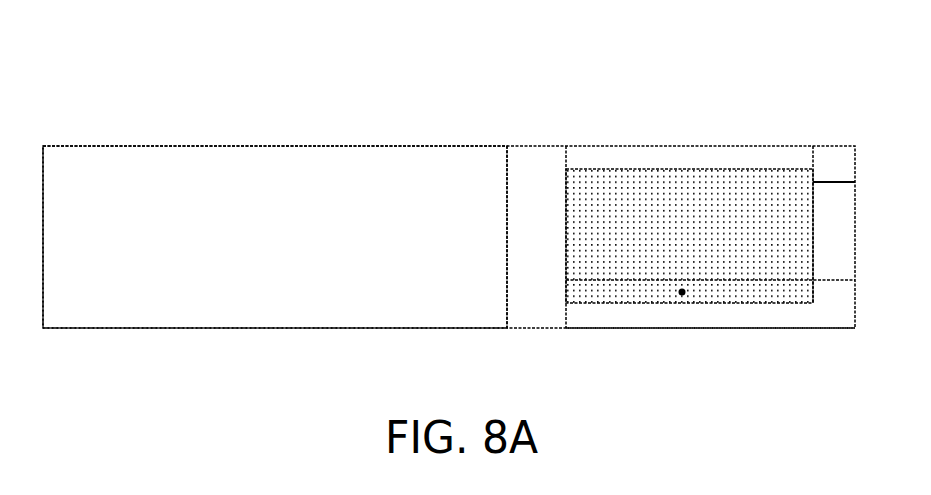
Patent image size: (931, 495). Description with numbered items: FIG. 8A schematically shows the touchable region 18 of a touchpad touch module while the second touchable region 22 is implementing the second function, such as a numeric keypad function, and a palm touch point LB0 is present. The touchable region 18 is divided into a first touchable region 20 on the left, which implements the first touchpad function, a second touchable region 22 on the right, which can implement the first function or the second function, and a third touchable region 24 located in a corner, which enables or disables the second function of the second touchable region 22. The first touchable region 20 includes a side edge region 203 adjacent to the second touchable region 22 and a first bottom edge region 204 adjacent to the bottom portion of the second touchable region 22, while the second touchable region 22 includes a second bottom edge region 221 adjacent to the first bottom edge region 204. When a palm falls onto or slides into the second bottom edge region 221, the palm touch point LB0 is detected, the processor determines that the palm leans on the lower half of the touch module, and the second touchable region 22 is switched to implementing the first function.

The touchable region 18 is at (360, 146).
The first touchable region 20 is at (440, 158).
The second touchable region 22 is at (738, 182).
The third touchable region 24 is at (829, 162).
The side edge region 203 is at (542, 315).
The first bottom edge region 204 is at (662, 313).
The second bottom edge region 221 is at (747, 300).
The palm touch point LB0 is at (682, 292).